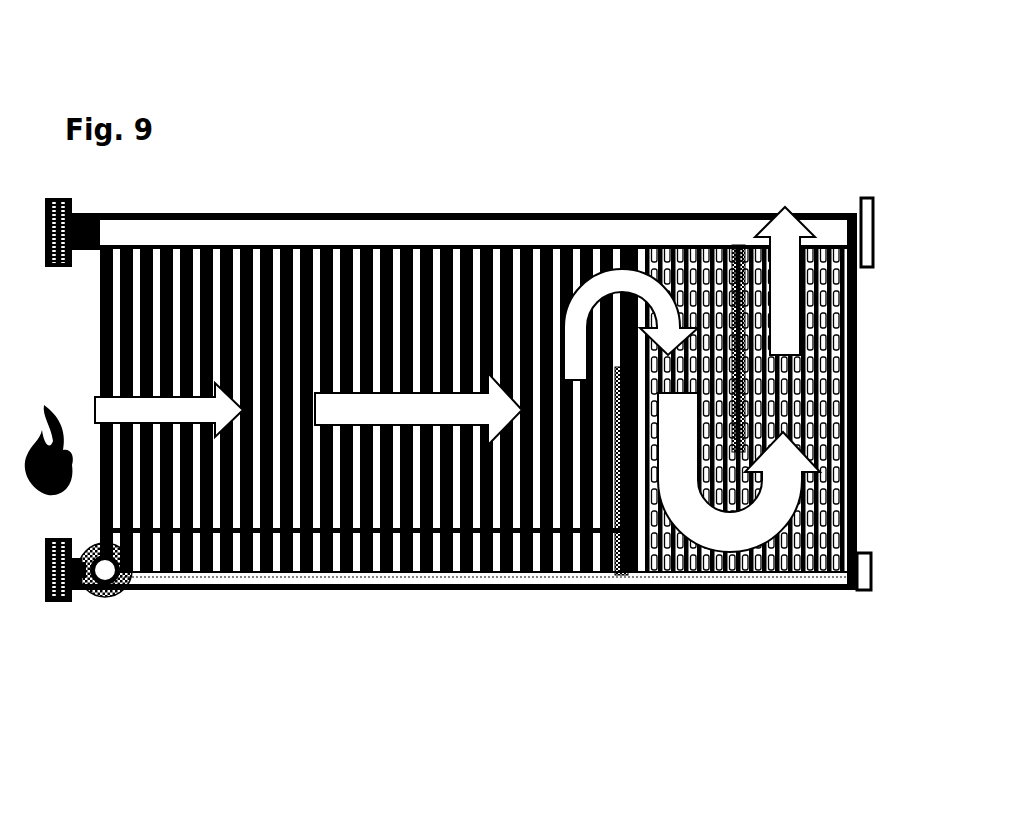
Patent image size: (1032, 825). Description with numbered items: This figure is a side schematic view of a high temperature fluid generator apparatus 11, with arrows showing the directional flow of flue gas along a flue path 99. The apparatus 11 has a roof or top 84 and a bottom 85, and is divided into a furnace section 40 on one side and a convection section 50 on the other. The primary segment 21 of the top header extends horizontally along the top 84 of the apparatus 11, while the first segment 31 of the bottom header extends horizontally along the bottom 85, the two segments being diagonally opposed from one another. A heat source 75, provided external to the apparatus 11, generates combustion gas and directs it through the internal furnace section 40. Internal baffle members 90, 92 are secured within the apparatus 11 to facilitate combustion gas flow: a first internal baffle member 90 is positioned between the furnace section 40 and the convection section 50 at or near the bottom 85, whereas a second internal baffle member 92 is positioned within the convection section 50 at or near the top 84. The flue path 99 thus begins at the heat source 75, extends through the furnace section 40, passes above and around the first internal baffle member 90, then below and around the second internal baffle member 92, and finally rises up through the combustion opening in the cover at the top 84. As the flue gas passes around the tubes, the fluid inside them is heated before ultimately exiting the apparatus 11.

The apparatus 11 is at (857, 164).
The primary segment 21 is at (576, 232).
The first segment 31 is at (682, 580).
The furnace section 40 is at (271, 563).
The convection section 50 is at (801, 553).
The heat source 75 is at (48, 507).
The top 84 is at (503, 201).
The bottom 85 is at (447, 628).
The first internal baffle member 90 is at (612, 576).
The second internal baffle member 92 is at (737, 245).
The flue path 99 is at (82, 408).